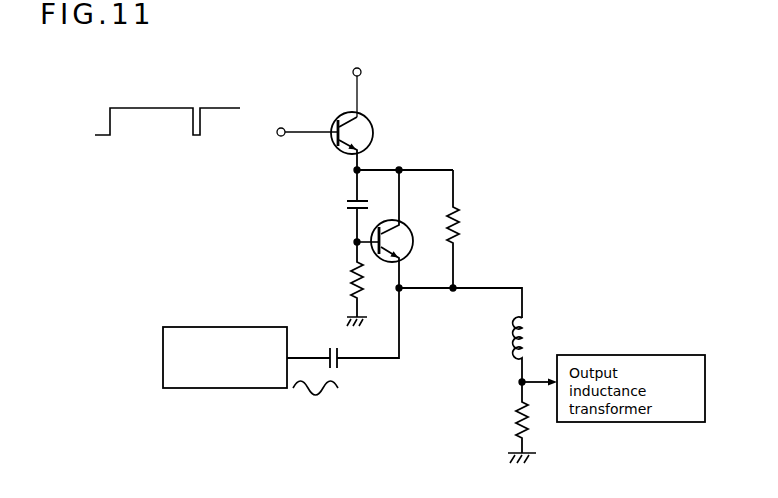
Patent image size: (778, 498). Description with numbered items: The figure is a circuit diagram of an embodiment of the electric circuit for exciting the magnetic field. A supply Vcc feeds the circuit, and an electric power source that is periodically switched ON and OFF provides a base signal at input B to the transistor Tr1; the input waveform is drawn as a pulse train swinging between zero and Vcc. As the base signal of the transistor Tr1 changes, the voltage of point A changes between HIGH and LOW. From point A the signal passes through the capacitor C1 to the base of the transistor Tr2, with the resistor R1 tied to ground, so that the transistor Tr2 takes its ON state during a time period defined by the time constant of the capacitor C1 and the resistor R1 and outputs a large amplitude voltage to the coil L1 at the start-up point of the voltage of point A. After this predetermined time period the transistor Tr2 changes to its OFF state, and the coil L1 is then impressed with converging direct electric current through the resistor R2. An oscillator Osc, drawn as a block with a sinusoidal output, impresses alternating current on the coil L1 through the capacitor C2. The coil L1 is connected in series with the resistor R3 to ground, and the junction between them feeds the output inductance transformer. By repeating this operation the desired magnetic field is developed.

The transistor Tr1 is at (332, 145).
The transistor Tr2 is at (407, 222).
The capacitor C1 is at (347, 202).
The capacitor C2 is at (331, 352).
The resistor R1 is at (351, 282).
The resistor R2 is at (460, 222).
The resistor R3 is at (515, 412).
The coil L1 is at (516, 339).
The oscillator Osc is at (235, 327).
The point A is at (364, 167).
The input terminal B is at (278, 136).
The supply voltage Vcc is at (376, 84).